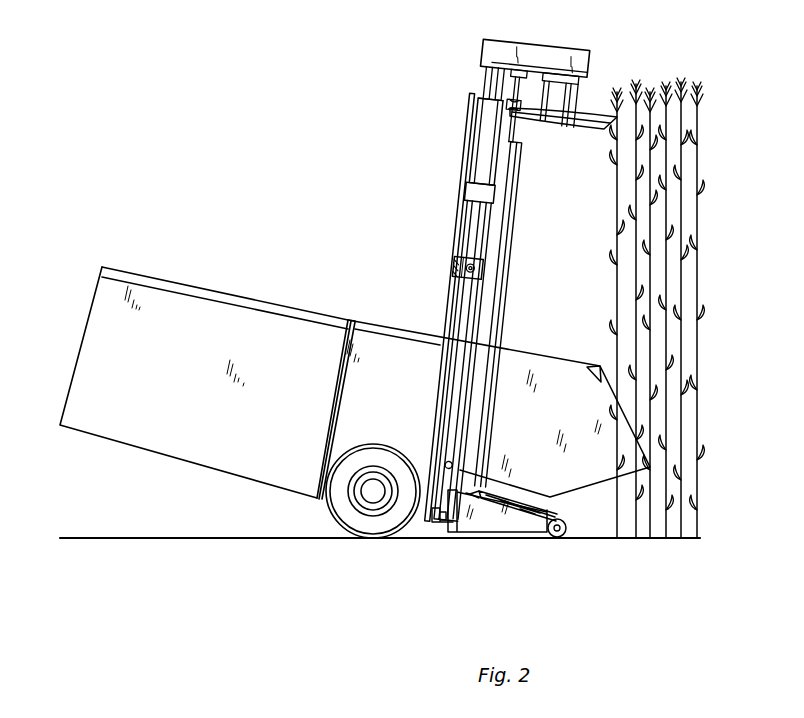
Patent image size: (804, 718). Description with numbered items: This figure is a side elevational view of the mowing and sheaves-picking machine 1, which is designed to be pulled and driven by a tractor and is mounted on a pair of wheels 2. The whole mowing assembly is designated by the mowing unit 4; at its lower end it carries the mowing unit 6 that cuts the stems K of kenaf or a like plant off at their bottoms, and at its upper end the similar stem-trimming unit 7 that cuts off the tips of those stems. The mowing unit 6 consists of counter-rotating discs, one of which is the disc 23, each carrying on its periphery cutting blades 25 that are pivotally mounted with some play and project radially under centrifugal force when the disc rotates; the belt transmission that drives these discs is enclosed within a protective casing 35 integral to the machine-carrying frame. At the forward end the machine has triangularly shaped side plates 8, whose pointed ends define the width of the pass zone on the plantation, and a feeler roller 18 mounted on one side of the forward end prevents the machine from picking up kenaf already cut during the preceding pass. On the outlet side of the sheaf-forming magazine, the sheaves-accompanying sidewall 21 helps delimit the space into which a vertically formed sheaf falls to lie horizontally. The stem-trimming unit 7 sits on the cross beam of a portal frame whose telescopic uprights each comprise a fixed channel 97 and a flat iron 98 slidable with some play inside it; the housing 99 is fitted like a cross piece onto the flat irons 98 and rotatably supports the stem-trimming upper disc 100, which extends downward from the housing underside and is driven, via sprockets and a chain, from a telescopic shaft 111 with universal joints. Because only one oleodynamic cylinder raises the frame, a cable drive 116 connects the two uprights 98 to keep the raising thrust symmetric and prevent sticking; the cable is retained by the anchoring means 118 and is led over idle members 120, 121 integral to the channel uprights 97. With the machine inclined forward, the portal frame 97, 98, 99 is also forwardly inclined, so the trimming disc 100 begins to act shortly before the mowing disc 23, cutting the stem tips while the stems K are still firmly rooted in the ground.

The mowing and sheaves-picking machine 1 is at (340, 207).
The wheels 2 is at (340, 510).
The mowing unit 4 is at (567, 216).
The mowing unit 6 is at (590, 546).
The stem-trimming unit 7 is at (593, 95).
The side plates 8 is at (597, 368).
The feeler roller 18 is at (569, 538).
The sheaves-accompanying sidewall 21 is at (251, 303).
The counter-rotating disc 23 is at (560, 491).
The cutting blades 25 is at (479, 496).
The protective casing 35 is at (459, 528).
The channel 97 is at (473, 122).
The flat iron 98 is at (480, 153).
The housing 99 is at (557, 50).
The stem-trimming upper disc 100 is at (588, 130).
The telescopic shaft 111 is at (522, 130).
The cable drive 116 is at (455, 377).
The anchoring means 118 is at (436, 461).
The idle member 120 is at (436, 526).
The idle member 121 is at (458, 256).
The stems K is at (630, 198).